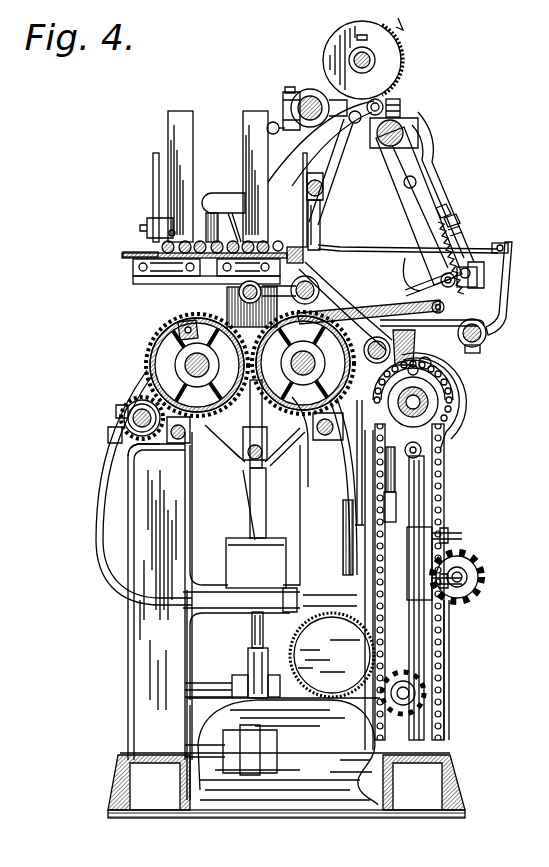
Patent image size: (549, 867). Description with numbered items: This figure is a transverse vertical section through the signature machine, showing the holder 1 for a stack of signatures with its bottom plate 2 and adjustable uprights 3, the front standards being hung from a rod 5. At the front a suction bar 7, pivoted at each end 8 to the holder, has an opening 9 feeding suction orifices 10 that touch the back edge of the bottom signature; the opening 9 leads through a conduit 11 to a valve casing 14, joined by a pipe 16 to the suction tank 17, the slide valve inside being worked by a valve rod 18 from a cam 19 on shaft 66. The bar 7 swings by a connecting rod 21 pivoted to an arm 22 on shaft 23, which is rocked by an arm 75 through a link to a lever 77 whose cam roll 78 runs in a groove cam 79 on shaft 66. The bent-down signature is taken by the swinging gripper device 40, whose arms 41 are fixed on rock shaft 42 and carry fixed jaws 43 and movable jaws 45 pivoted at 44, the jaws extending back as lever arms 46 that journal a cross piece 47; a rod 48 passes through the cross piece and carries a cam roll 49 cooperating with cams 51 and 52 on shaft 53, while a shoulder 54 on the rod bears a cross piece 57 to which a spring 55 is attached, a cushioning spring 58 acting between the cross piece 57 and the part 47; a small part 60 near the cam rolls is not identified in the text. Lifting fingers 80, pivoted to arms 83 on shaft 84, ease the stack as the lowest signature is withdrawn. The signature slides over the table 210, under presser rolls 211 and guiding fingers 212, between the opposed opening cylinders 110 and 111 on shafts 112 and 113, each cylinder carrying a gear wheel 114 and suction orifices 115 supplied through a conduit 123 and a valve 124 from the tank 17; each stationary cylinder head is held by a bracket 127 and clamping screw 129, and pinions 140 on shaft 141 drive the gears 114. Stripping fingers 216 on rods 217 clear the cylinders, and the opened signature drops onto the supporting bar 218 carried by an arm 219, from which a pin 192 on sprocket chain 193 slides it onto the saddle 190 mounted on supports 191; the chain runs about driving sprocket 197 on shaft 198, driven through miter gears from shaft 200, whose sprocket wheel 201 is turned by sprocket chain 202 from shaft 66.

The holder 1 is at (223, 195).
The bottom plate 2 is at (133, 265).
The uprights 3 is at (187, 137).
The rod 5 is at (317, 181).
The bar 7 is at (303, 253).
The pivot end 8 is at (278, 241).
The opening 9 is at (342, 246).
The suction orifices 10 is at (298, 245).
The conduit 11 is at (362, 452).
The valve casing 14 is at (420, 553).
The pipe 16 is at (360, 643).
The suction tank 17 is at (326, 697).
The valve rod 18 is at (424, 486).
The cam 19 is at (430, 432).
The connecting rod 21 is at (349, 172).
The arm 22 is at (333, 100).
The shaft 23 is at (290, 95).
The swinging gripper device 40 is at (408, 207).
The arms 41 is at (432, 234).
The rock shaft 42 is at (418, 128).
The gripper jaws 43 is at (407, 292).
The pivot 44 is at (444, 309).
The movable jaws 45 is at (406, 290).
The lever arms 46 is at (455, 284).
The cross piece 47 is at (468, 282).
The rod 48 is at (432, 160).
The cam roll 49 is at (385, 104).
The cam 51 is at (340, 48).
The cam 52 is at (403, 62).
The shaft 53 is at (376, 57).
The shoulder 54 is at (455, 220).
The spring 55 is at (441, 208).
The cross piece 57 is at (452, 232).
The cushioning spring 58 is at (455, 243).
The nut 60 is at (401, 107).
The shaft 66 is at (430, 400).
The arm 75 is at (279, 122).
The lever 77 is at (408, 354).
The cam roll 78 is at (445, 360).
The groove cam 79 is at (470, 410).
The lifting fingers 80 is at (498, 244).
The arms 83 is at (508, 318).
The shaft 84 is at (486, 338).
The cylinder 110 is at (150, 357).
The cylinder 111 is at (301, 364).
The shaft 112 is at (175, 365).
The shaft 113 is at (303, 363).
The gear wheel 114 is at (158, 332).
The suction orifices 115 is at (182, 325).
The conduit 123 is at (98, 565).
The valve 124 is at (292, 603).
The bracket 127 is at (124, 452).
The clamping screw 129 is at (120, 404).
The pinions 140 is at (116, 412).
The shaft 141 is at (108, 432).
The saddle 190 is at (209, 430).
The supports 191 is at (268, 522).
The pins 192 is at (277, 410).
The sprocket chain 193 is at (232, 478).
The driving sprocket 197 is at (248, 662).
The shaft 198 is at (208, 688).
The shaft 200 is at (409, 691).
The sprocket wheel 201 is at (447, 676).
The sprocket chain 202 is at (446, 466).
The table 210 is at (356, 318).
The presser rolls 211 is at (318, 284).
The guiding fingers 212 is at (228, 308).
The fingers 216 is at (186, 470).
The rods 217 is at (175, 444).
The supporting bar 218 is at (197, 365).
The arm 219 is at (243, 450).